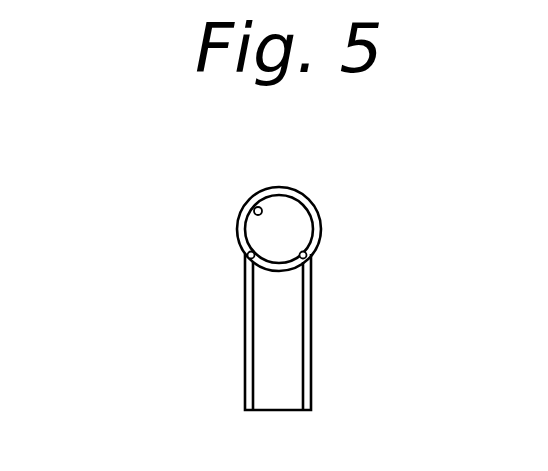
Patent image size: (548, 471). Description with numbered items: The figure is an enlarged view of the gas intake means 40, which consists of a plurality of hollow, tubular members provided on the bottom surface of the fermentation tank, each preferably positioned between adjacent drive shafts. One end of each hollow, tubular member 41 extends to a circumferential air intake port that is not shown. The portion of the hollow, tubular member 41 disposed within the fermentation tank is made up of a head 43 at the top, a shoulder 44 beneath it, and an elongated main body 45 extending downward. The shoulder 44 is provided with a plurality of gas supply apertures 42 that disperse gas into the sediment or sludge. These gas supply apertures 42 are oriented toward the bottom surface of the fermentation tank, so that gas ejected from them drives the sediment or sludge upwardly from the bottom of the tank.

The gas intake means 40 is at (192, 163).
The hollow, tubular member 41 is at (328, 316).
The gas supply aperture 42 is at (306, 257).
The head 43 is at (254, 210).
The shoulder 44 is at (248, 256).
The main body 45 is at (272, 316).